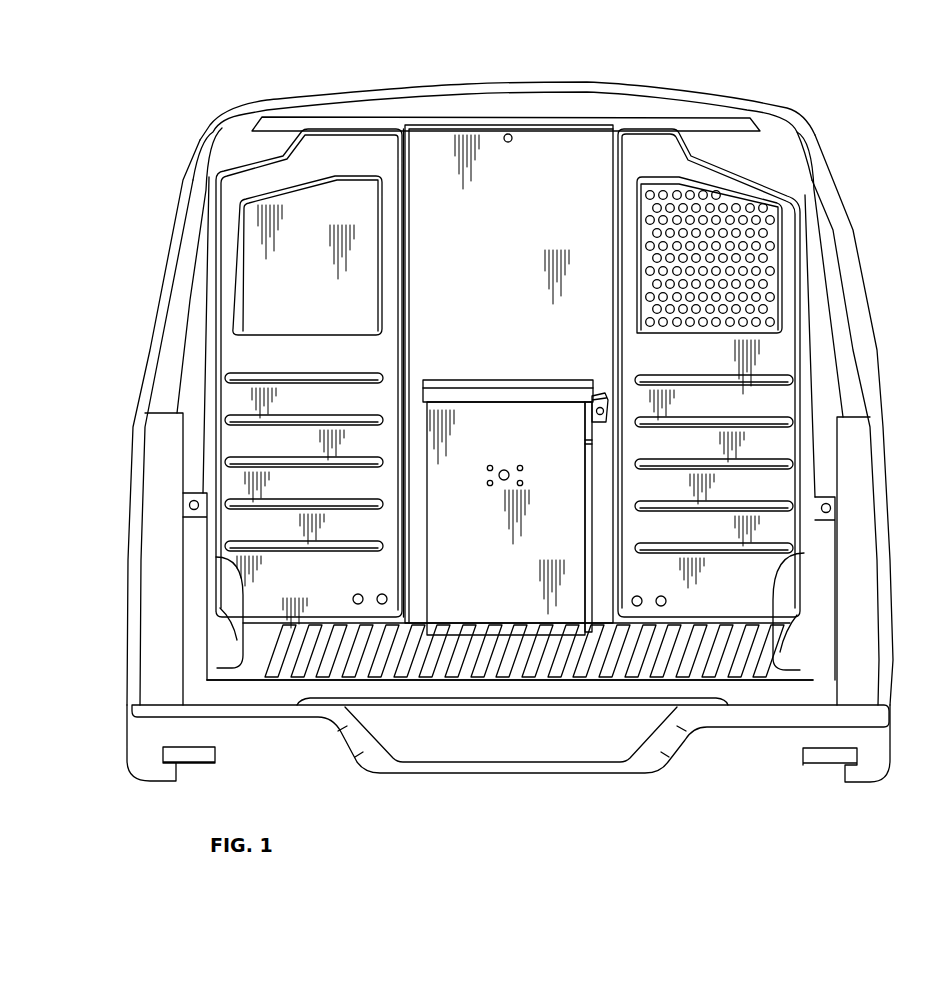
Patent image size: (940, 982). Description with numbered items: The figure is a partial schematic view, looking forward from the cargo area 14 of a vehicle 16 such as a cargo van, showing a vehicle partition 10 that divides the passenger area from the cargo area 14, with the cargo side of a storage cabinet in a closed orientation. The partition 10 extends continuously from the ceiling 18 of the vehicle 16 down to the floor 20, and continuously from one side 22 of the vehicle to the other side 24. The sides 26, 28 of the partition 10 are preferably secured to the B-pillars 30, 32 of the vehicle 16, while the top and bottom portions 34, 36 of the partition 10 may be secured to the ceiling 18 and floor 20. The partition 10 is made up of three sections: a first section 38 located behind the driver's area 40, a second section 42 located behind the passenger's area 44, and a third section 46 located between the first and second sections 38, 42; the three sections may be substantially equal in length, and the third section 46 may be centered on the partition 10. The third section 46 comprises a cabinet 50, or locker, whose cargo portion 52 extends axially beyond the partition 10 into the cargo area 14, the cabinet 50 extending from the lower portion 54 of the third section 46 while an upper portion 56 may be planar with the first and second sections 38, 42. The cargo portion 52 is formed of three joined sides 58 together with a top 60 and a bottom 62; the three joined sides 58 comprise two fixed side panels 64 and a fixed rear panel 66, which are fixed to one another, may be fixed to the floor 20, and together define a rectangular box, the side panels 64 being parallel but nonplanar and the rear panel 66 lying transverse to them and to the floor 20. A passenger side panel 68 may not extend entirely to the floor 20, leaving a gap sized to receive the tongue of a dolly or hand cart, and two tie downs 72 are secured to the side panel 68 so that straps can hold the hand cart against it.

The vehicle partition 10 is at (543, 137).
The cargo area 14 is at (628, 673).
The vehicle 16 is at (271, 98).
The ceiling 18 is at (745, 108).
The floor 20 is at (742, 645).
The one side of the vehicle 22 is at (152, 380).
The other side of the vehicle 24 is at (853, 363).
The side of the partition 26 is at (205, 325).
The side of the partition 28 is at (808, 257).
The B-pillar 30 is at (172, 285).
The B-pillar 32 is at (817, 233).
The top portion of the partition 34 is at (403, 122).
The bottom portion of the partition 36 is at (247, 628).
The first section 38 is at (335, 137).
The driver's area 40 is at (352, 167).
The second section 42 is at (660, 170).
The passenger's area 44 is at (772, 193).
The third section 46 is at (448, 138).
The cabinet 50 is at (478, 383).
The cargo portion 52 is at (532, 398).
The lower portion of the third section 54 is at (415, 553).
The upper portion of the third section 56 is at (522, 160).
The three joined sides 58 is at (420, 478).
The top 60 is at (443, 373).
The bottom 62 is at (493, 640).
The fixed side panels 64 is at (420, 575).
The fixed rear panel 66 is at (567, 478).
The passenger side panel 68 is at (588, 437).
The tie downs 72 is at (600, 393).